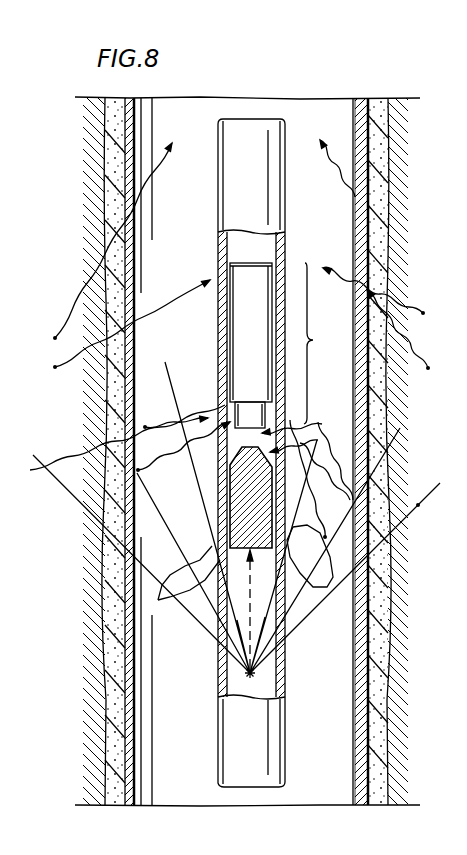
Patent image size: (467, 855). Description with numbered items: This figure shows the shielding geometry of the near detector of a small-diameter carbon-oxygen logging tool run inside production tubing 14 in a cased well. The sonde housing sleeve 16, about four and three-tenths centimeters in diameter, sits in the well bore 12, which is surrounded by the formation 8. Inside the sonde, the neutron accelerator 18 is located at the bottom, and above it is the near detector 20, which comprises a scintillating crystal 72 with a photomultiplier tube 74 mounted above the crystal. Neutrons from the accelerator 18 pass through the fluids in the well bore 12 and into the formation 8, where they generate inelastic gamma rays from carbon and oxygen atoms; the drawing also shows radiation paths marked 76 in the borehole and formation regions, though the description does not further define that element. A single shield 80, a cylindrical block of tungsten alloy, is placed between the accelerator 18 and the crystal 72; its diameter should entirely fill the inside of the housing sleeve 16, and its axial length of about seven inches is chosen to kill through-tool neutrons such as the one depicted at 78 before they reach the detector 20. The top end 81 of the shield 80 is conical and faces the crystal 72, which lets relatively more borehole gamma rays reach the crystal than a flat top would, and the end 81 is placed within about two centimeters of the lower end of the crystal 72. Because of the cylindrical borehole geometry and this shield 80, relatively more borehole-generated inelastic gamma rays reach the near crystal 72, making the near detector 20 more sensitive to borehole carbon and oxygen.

The formation 8 is at (431, 542).
The well bore 12 is at (323, 737).
The production tubing 14 is at (285, 197).
The housing sleeve 16 is at (220, 673).
The neutron accelerator 18 is at (255, 673).
The near detector 20 is at (313, 340).
The scintillating crystal 72 is at (230, 408).
The photomultiplier tube 74 is at (240, 290).
The borehole fluid 76 is at (220, 600).
The neutron 78 is at (252, 600).
The shield 80 is at (248, 513).
The conical end of shield 81 is at (272, 450).